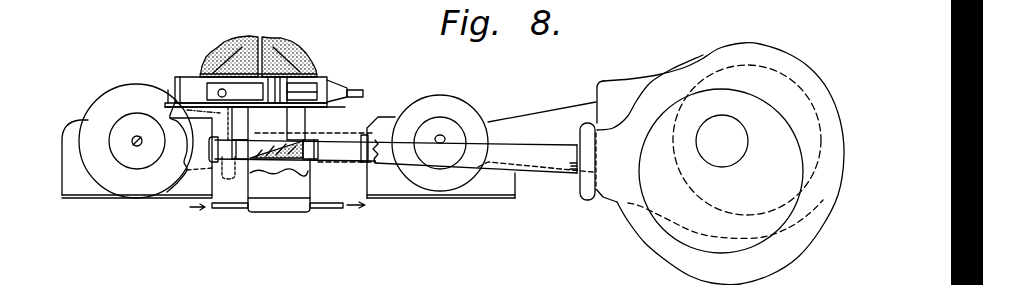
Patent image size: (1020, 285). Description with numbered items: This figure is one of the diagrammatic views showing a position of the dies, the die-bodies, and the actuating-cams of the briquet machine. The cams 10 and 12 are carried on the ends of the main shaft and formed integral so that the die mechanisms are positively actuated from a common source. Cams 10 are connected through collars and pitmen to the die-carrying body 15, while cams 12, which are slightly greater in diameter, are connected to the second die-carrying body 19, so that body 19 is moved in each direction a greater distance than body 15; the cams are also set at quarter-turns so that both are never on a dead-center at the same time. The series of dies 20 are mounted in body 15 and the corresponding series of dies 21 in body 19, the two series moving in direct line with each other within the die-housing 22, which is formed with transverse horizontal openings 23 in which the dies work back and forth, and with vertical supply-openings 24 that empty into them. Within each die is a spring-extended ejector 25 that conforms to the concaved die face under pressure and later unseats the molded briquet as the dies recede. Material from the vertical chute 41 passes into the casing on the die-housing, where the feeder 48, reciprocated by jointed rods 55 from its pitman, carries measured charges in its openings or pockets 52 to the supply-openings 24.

The cam 10 is at (787, 87).
The cam 12 is at (657, 193).
The die-carrying body 15 is at (395, 184).
The die-carrying body 19 is at (75, 128).
The dies 20 is at (347, 147).
The dies 21 is at (212, 168).
The die-housing 22 is at (302, 185).
The transverse horizontal openings 23 is at (265, 150).
The vertical supply-openings 24 is at (298, 123).
The ejector 25 is at (240, 148).
The vertical chute 41 is at (278, 90).
The feeder 48 is at (207, 92).
The openings or pockets 52 is at (303, 73).
The jointed rods 55 is at (355, 96).